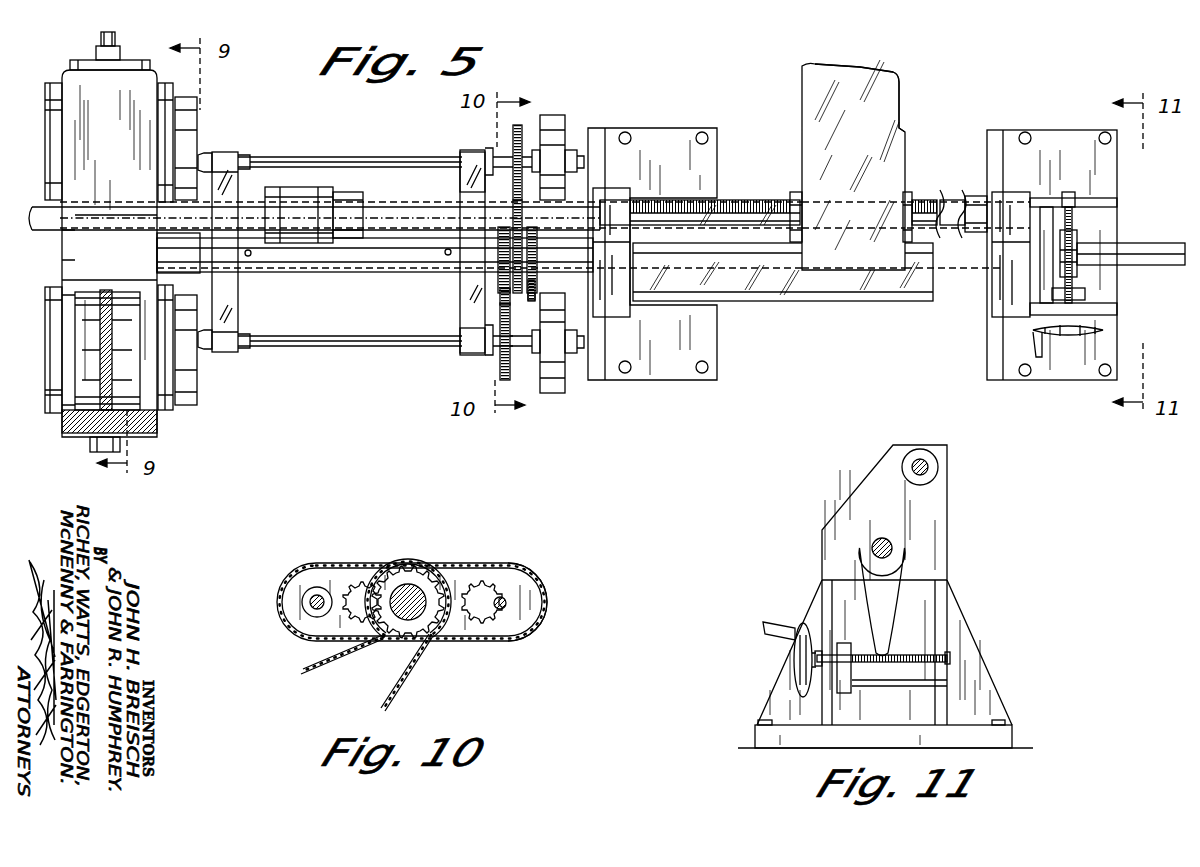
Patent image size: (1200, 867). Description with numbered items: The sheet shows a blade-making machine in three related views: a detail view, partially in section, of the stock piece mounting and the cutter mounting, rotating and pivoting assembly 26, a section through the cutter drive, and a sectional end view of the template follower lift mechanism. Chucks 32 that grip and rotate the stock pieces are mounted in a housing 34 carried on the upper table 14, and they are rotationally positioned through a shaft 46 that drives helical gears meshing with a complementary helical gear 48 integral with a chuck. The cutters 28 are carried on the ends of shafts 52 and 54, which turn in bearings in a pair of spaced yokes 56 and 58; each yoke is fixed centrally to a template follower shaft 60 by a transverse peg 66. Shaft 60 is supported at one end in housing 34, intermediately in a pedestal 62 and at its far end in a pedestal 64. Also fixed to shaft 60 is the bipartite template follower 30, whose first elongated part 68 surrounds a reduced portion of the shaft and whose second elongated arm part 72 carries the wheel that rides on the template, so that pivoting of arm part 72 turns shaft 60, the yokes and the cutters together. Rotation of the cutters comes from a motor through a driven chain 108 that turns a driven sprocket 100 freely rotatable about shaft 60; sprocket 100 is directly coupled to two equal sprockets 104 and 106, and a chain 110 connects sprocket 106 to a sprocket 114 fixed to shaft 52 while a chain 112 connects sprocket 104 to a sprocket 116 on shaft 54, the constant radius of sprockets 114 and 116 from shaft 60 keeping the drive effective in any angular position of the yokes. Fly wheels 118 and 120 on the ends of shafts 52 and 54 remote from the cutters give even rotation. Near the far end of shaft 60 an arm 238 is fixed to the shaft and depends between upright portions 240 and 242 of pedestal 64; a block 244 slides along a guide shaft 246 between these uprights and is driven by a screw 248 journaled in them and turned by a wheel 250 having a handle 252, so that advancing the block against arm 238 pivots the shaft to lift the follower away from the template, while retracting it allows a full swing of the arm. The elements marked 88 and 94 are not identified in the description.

In FIG. 11, the upper table 14 is at (1030, 748).
In FIG. 5, the cutter mounting, rotating and pivoting assembly 26 is at (462, 352).
In FIG. 5, the cutters 28 is at (206, 152).
In FIG. 5, the template follower 30 is at (802, 115).
In FIG. 5, the chucks 32 is at (205, 120).
In FIG. 5, the housing 34 is at (72, 80).
In FIG. 5, the shaft 46 is at (118, 48).
In FIG. 5, the helical gear 48 is at (110, 377).
In FIG. 5, the shaft 52 is at (345, 160).
In FIG. 10, the shaft 52 is at (312, 608).
In FIG. 5, the shaft 54 is at (330, 346).
In FIG. 10, the shaft 54 is at (503, 612).
In FIG. 5, the yoke 56 is at (238, 300).
In FIG. 5, the yoke 58 is at (460, 300).
In FIG. 5, the template follower shaft 60 is at (367, 272).
In FIG. 10, the template follower shaft 60 is at (408, 586).
In FIG. 11, the template follower shaft 60 is at (885, 548).
In FIG. 5, the pedestal 62 is at (665, 347).
In FIG. 5, the pedestal 64 is at (1000, 310).
In FIG. 11, the pedestal 64 is at (985, 690).
In FIG. 5, the peg 66 is at (446, 252).
In FIG. 5, the first elongated part 68 is at (810, 303).
In FIG. 5, the second elongated arm part 72 is at (905, 120).
In FIG. 5, the lead screw 88 is at (757, 205).
In FIG. 11, the lead screw 88 is at (920, 460).
In FIG. 5, the collar 94 is at (795, 192).
In FIG. 5, the driven sprocket 100 is at (540, 267).
In FIG. 10, the driven sprocket 100 is at (395, 645).
In FIG. 5, the sprocket 104 is at (498, 242).
In FIG. 10, the sprocket 104 is at (430, 572).
In FIG. 5, the sprocket 106 is at (532, 230).
In FIG. 5, the driven chain 108 is at (531, 302).
In FIG. 10, the driven chain 108 is at (403, 693).
In FIG. 5, the chain 110 is at (487, 191).
In FIG. 10, the chain 110 is at (357, 565).
In FIG. 5, the chain 112 is at (500, 302).
In FIG. 10, the chain 112 is at (470, 563).
In FIG. 5, the sprocket 114 is at (520, 130).
In FIG. 10, the sprocket 114 is at (300, 583).
In FIG. 5, the sprocket 116 is at (505, 367).
In FIG. 10, the sprocket 116 is at (530, 603).
In FIG. 5, the fly wheel 118 is at (570, 125).
In FIG. 5, the fly wheel 120 is at (568, 385).
In FIG. 5, the arm 238 is at (1080, 240).
In FIG. 11, the arm 238 is at (900, 578).
In FIG. 5, the upright portion 240 is at (1105, 315).
In FIG. 11, the upright portion 240 is at (825, 600).
In FIG. 5, the upright portion 242 is at (1100, 205).
In FIG. 11, the upright portion 242 is at (942, 605).
In FIG. 5, the block 244 is at (1085, 294).
In FIG. 11, the block 244 is at (845, 693).
In FIG. 11, the guide shaft 246 is at (888, 686).
In FIG. 5, the screw 248 is at (1068, 207).
In FIG. 11, the screw 248 is at (906, 655).
In FIG. 5, the wheel 250 is at (1068, 338).
In FIG. 11, the wheel 250 is at (793, 660).
In FIG. 5, the handle 252 is at (1042, 358).
In FIG. 11, the handle 252 is at (765, 628).